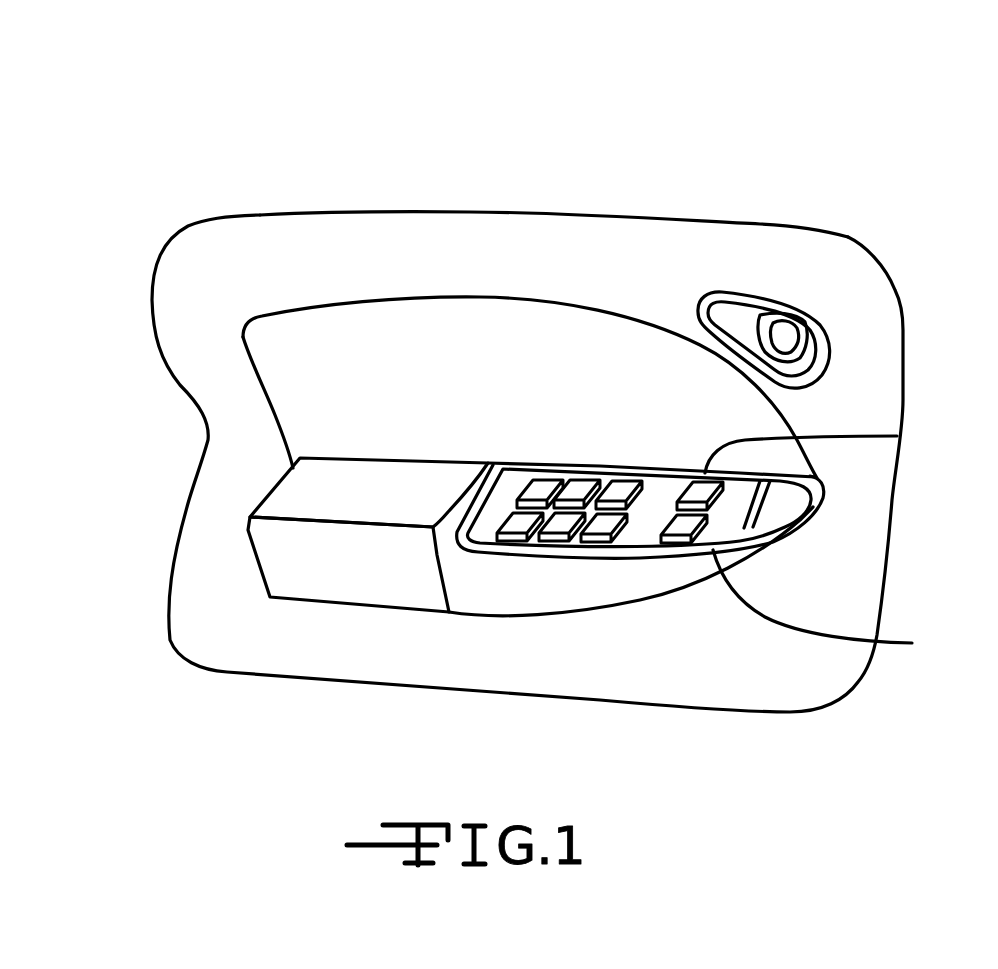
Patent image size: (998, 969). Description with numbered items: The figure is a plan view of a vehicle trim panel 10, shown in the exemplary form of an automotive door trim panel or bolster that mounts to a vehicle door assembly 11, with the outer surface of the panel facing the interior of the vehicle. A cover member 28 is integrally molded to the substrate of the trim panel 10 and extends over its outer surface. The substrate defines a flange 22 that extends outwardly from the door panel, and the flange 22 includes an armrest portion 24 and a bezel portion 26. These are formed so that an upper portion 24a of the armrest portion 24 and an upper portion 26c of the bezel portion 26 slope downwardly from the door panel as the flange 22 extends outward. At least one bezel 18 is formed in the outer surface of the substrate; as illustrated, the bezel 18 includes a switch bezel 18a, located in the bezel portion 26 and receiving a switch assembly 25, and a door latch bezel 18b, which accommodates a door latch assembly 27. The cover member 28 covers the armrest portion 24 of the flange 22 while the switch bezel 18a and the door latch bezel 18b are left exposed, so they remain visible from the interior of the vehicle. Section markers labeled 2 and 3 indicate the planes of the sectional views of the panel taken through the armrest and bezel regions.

The section line 2- 2 is at (320, 148).
The section line 3- 3 is at (572, 160).
The trim panel 10 is at (716, 125).
The vehicle door assembly 11 is at (750, 222).
The bezel 18 is at (791, 300).
The switch bezel 18a is at (837, 605).
The door latch bezel 18b is at (823, 340).
The flange 22 is at (290, 474).
The armrest portion 24 is at (280, 524).
The upper portion of the armrest portion 24a is at (262, 496).
The switch assembly 25 is at (656, 530).
The bezel portion 26 is at (807, 533).
The upper portion of the bezel portion 26c is at (790, 497).
The door latch assembly 27 is at (787, 348).
The cover member 28 is at (442, 318).